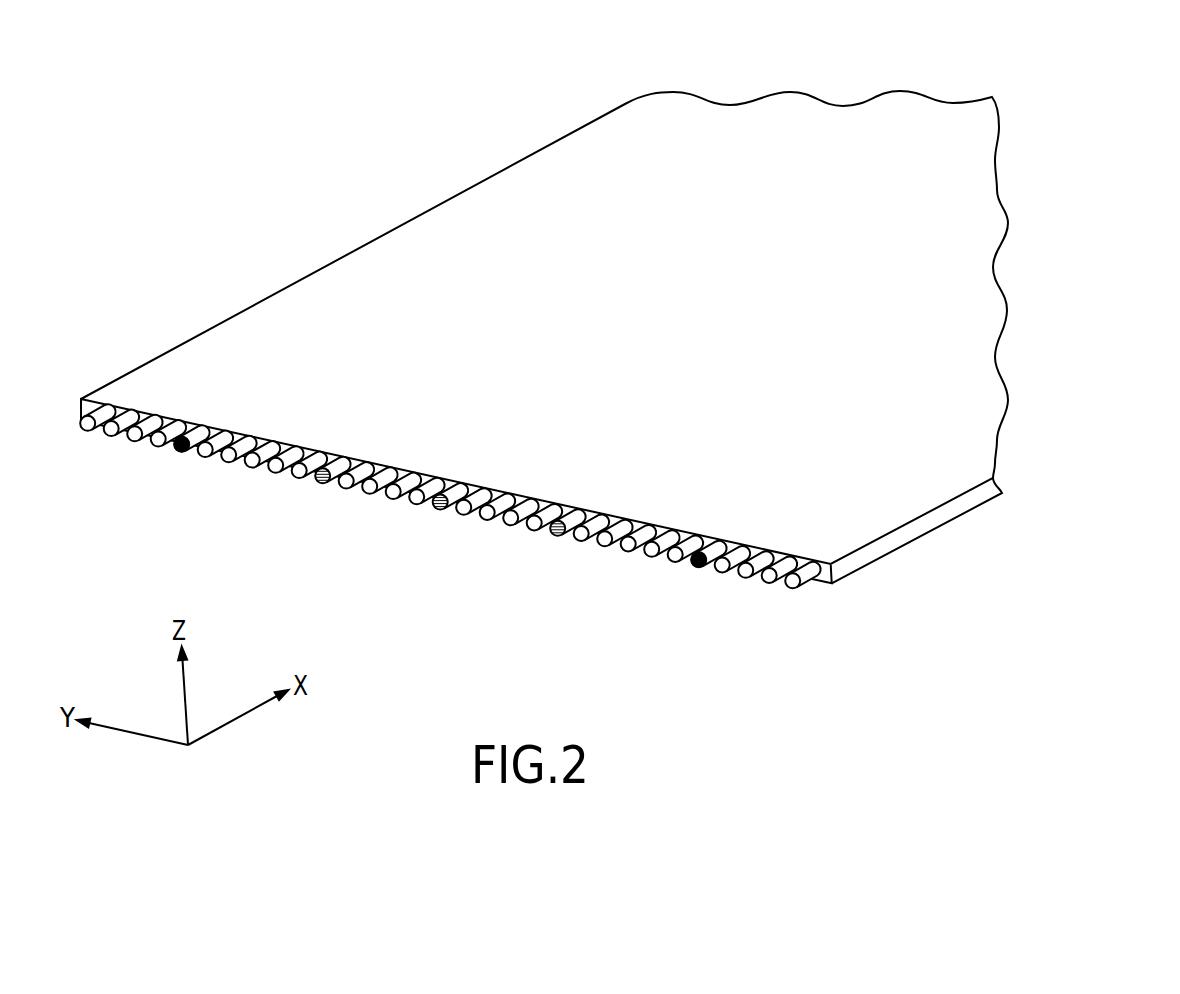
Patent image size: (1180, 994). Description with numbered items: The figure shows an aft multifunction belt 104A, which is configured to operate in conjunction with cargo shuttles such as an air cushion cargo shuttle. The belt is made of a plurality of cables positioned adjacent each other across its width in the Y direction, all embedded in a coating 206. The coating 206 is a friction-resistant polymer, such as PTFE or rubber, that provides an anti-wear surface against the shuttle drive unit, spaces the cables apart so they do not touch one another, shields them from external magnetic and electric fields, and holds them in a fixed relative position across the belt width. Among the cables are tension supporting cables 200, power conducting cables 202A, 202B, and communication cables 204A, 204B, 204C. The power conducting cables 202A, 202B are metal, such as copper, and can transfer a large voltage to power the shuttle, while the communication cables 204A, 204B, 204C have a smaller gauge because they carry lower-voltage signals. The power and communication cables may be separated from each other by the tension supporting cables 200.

The aft multifunction belt 104A is at (618, 399).
The coating 206 is at (267, 330).
The tension supporting cables 200 is at (453, 556).
The power conducting cable 202A is at (180, 445).
The power conducting cable 202B is at (698, 562).
The communication cable 204A is at (320, 479).
The communication cable 204B is at (438, 505).
The communication cable 204C is at (556, 531).